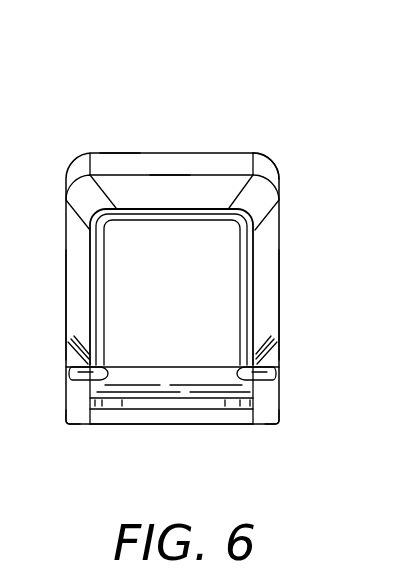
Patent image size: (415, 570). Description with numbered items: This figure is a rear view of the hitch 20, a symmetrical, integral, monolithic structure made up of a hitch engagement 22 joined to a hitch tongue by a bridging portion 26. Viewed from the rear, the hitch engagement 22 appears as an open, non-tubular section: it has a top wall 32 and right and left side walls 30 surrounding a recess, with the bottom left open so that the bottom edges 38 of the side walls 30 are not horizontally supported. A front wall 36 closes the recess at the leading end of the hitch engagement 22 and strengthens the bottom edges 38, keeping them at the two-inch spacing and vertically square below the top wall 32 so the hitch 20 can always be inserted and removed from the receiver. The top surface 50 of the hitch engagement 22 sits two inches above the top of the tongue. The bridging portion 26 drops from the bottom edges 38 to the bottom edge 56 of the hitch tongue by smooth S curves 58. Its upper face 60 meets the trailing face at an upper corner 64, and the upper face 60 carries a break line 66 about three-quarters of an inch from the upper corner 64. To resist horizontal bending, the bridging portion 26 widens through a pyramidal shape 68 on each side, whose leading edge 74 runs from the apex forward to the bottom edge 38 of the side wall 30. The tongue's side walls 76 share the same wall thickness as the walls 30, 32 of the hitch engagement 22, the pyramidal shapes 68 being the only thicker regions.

The hitch 20 is at (101, 106).
The hitch engagement 22 is at (115, 193).
The bridging portion 26 is at (157, 135).
The side walls 30 is at (90, 248).
The top wall 32 is at (206, 215).
The front wall 36 is at (183, 340).
The bottom edges 38 is at (72, 376).
The top surface 50 is at (250, 153).
The bottom edge 56 is at (117, 427).
The S curves 58 is at (78, 390).
The upper face 60 is at (163, 162).
The upper corner 64 is at (118, 153).
The break line 66 is at (211, 210).
The pyramidal shape 68 is at (68, 328).
The leading edge 74 is at (77, 350).
The side walls 76 is at (73, 418).